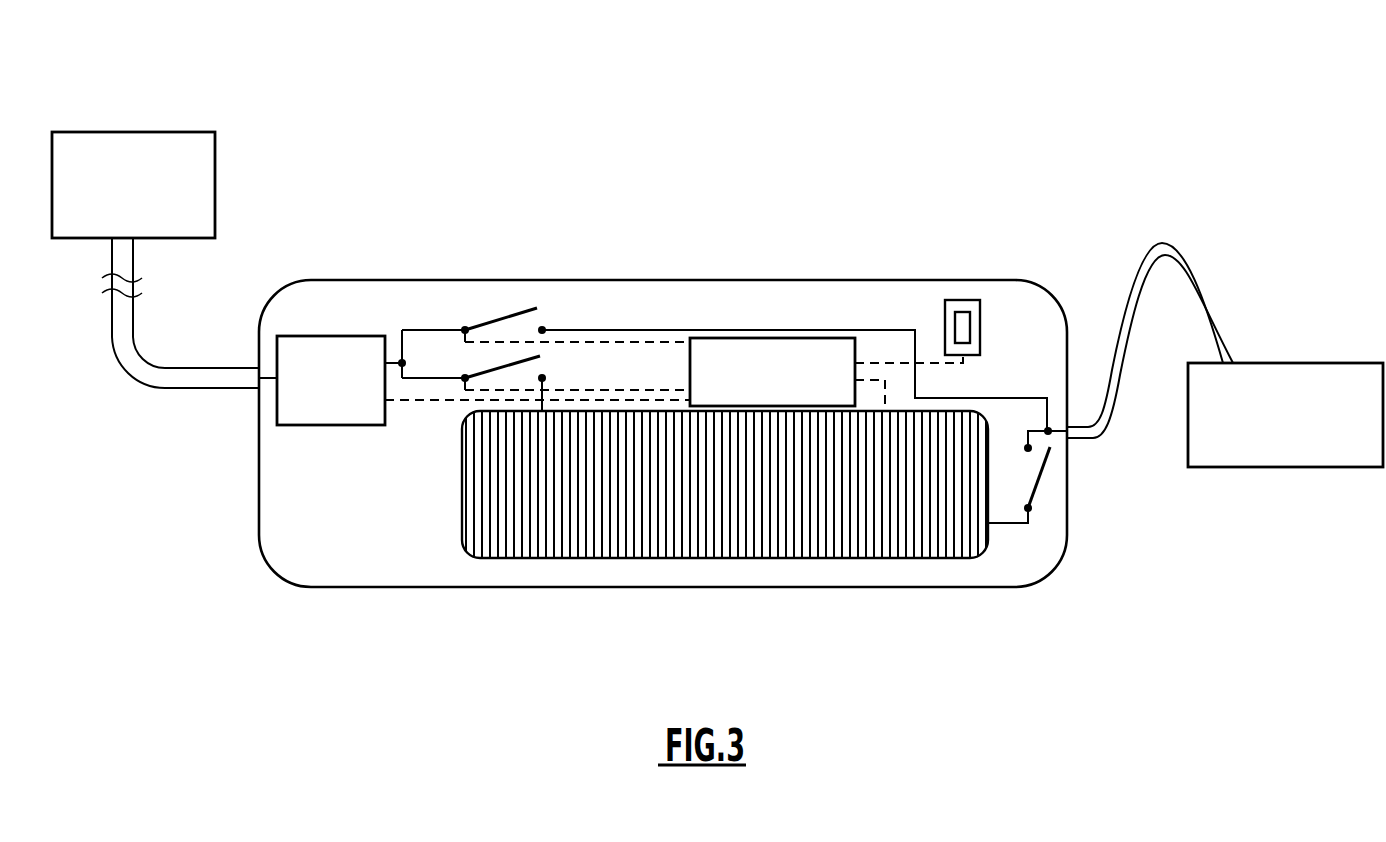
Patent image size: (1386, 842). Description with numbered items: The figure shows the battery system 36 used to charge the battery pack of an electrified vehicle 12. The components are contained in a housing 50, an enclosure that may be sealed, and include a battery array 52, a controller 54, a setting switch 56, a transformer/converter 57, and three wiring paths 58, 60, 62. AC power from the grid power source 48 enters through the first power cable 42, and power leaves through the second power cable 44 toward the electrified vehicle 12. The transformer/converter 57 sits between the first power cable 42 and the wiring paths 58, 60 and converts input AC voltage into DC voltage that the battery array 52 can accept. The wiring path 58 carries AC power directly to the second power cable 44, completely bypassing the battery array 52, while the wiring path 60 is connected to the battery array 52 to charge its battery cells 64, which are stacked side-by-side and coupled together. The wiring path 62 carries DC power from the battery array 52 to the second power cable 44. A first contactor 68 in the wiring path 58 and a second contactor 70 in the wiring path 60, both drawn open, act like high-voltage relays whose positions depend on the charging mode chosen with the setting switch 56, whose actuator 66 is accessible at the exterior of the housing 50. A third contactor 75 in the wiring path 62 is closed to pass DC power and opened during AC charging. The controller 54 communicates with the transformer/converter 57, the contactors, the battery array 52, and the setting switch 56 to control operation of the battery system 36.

The electrified vehicle 12 is at (1285, 415).
The battery system 36 is at (796, 243).
The first power cable 42 is at (218, 368).
The second power cable 44 is at (1143, 250).
The grid power source 48 is at (133, 185).
The housing 50 is at (895, 280).
The battery array 52 is at (725, 524).
The controller 54 is at (832, 345).
The setting switch 56 is at (963, 300).
The transformer/converter 57 is at (315, 425).
The wiring path 58 is at (581, 318).
The wiring path 60 is at (438, 378).
The wiring path 62 is at (1003, 523).
The battery cells 64 is at (688, 557).
The actuator 66 is at (972, 320).
The first contactor 68 is at (478, 318).
The second contactor 70 is at (478, 367).
The third contactor 75 is at (1055, 482).